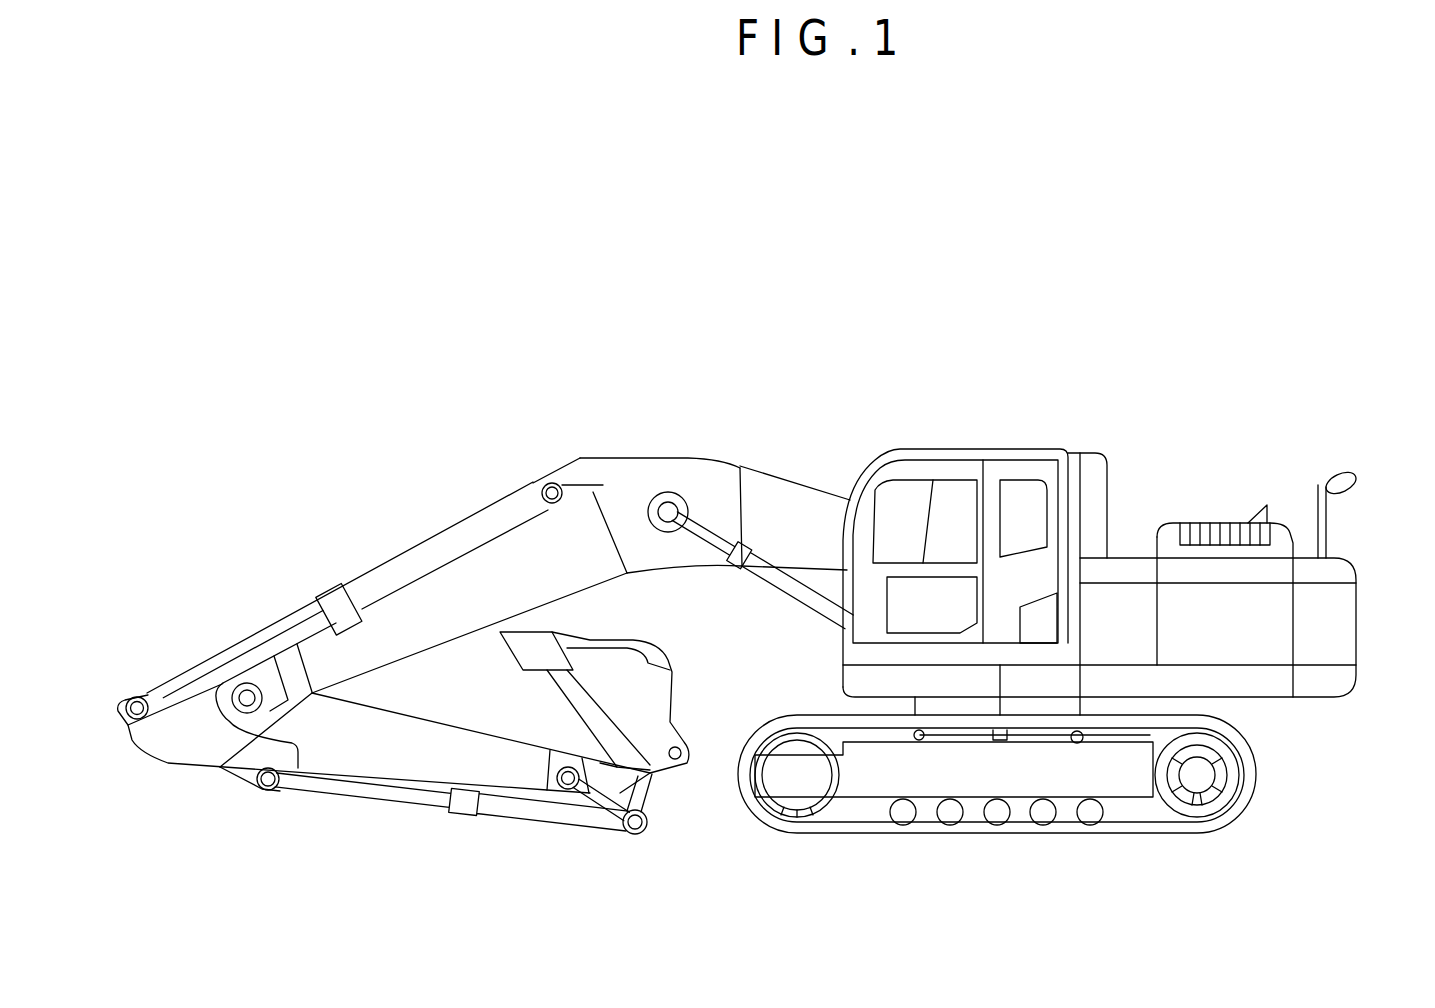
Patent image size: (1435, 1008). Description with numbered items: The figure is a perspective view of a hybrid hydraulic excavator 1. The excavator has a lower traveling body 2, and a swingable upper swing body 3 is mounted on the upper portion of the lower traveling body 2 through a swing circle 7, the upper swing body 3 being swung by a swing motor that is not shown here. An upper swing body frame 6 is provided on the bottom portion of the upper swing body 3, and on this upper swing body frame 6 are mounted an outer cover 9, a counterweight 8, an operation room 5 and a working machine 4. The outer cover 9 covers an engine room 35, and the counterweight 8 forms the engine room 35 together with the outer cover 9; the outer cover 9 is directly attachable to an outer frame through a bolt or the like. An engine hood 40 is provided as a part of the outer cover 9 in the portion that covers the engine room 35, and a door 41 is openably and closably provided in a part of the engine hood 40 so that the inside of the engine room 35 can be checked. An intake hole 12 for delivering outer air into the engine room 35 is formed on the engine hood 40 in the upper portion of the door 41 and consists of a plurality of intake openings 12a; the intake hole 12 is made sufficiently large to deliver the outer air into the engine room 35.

The hydraulic excavator 1 is at (1222, 274).
The lower traveling body 2 is at (1270, 775).
The upper swing body 3 is at (1142, 387).
The working machine 4 is at (472, 392).
The operation room 5 is at (936, 448).
The upper swing body frame 6 is at (1340, 682).
The swing circle 7 is at (1015, 702).
The counterweight 8 is at (1335, 608).
The outer cover 9 is at (1283, 524).
The intake hole 12 is at (1243, 522).
The intake openings 12a is at (1207, 522).
The engine room 35 is at (1143, 565).
The engine hood 40 is at (1175, 528).
The door 41 is at (1273, 598).